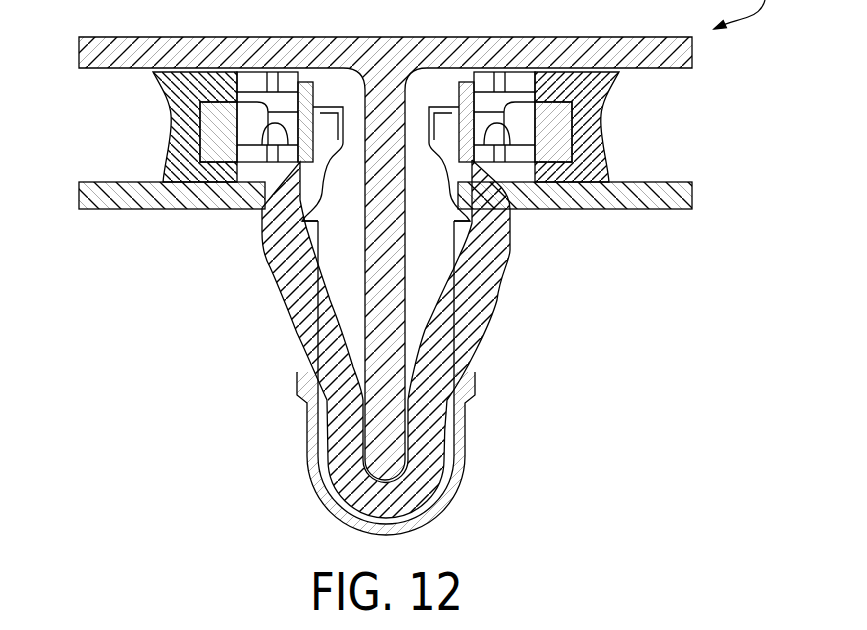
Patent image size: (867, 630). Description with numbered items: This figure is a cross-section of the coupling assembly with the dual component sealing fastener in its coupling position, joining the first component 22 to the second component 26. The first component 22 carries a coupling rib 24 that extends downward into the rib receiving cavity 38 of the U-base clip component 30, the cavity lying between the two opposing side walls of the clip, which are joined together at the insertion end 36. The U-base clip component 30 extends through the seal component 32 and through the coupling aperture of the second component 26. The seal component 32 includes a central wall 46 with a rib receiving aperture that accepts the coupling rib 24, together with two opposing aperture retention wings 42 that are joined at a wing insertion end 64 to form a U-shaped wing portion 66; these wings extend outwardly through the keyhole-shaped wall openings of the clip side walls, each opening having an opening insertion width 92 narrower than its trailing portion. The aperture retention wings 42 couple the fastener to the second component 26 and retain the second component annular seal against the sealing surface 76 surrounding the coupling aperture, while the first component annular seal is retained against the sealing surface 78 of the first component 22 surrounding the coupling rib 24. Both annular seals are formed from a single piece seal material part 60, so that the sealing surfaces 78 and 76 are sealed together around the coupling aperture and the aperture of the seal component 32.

The first component 22 is at (97, 55).
The coupling rib 24 is at (387, 431).
The second component 26 is at (676, 190).
The U-base clip component 30 is at (424, 383).
The seal component 32 is at (383, 353).
The insertion end 36 is at (440, 503).
The rib receiving cavity 38 is at (350, 307).
The aperture retention wing 42 is at (287, 311).
The central wall 46 is at (220, 123).
The single piece seal material part 60 is at (208, 146).
The wing insertion end 64 is at (373, 497).
The U-shaped wing portion 66 is at (431, 391).
The sealing surface 76 is at (656, 182).
The sealing surface 78 is at (583, 144).
The opening insertion width 92 is at (501, 310).